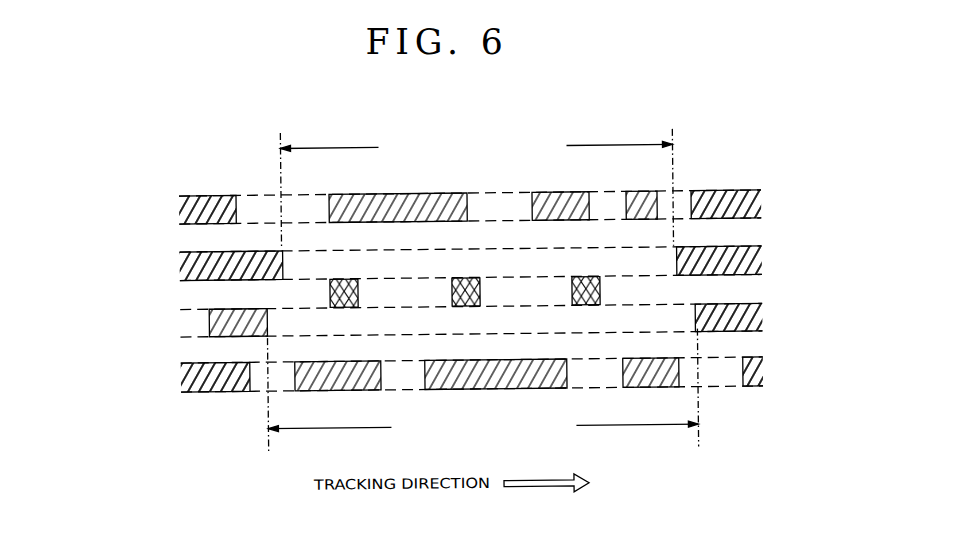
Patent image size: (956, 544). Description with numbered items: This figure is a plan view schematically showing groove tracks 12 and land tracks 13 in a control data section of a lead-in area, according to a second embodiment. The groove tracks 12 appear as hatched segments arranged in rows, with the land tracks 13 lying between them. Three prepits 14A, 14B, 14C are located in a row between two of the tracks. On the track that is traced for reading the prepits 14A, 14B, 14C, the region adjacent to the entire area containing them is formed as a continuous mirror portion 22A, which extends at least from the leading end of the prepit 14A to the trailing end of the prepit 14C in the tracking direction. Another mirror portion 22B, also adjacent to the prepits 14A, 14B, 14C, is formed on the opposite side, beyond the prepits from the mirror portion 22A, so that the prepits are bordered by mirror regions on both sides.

The groove tracks 12 is at (180, 212).
The land tracks 13 is at (760, 235).
The prepit 14A is at (330, 292).
The prepit 14B is at (452, 292).
The prepit 14C is at (600, 292).
The continuous mirror portion 22A is at (476, 181).
The mirror portion 22B is at (482, 390).